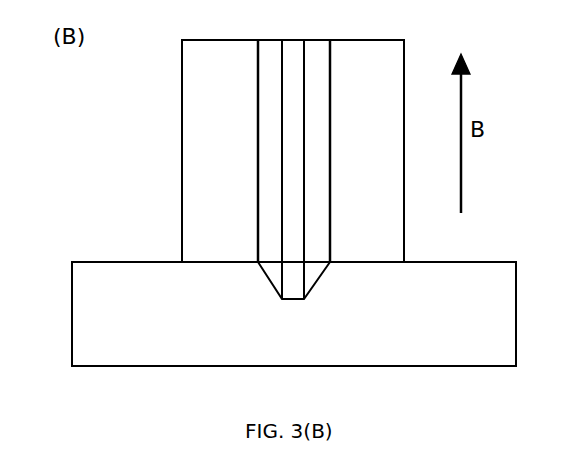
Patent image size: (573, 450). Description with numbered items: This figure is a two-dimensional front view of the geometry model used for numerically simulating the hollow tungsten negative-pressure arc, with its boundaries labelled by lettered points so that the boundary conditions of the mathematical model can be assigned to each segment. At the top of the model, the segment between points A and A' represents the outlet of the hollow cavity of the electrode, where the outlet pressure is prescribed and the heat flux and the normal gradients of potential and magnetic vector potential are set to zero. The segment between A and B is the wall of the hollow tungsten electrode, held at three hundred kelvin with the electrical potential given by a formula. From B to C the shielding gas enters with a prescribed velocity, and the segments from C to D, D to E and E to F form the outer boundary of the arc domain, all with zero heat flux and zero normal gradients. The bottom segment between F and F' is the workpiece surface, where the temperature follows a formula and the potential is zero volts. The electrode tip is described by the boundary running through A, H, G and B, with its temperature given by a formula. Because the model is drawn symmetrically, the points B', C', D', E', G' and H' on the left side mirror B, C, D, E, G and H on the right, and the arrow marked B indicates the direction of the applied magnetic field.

The boundary point A is at (310, 157).
The boundary point A' is at (287, 157).
The boundary point B is at (328, 138).
The boundary point B' is at (248, 138).
The boundary point C is at (409, 27).
The boundary point C' is at (177, 27).
The boundary point D is at (413, 249).
The boundary point D' is at (166, 249).
The boundary point E is at (516, 249).
The boundary point E' is at (64, 249).
The boundary point F is at (518, 361).
The boundary point F' is at (64, 361).
The boundary point G is at (341, 249).
The boundary point G' is at (243, 249).
The boundary point H is at (307, 313).
The boundary point H' is at (272, 313).